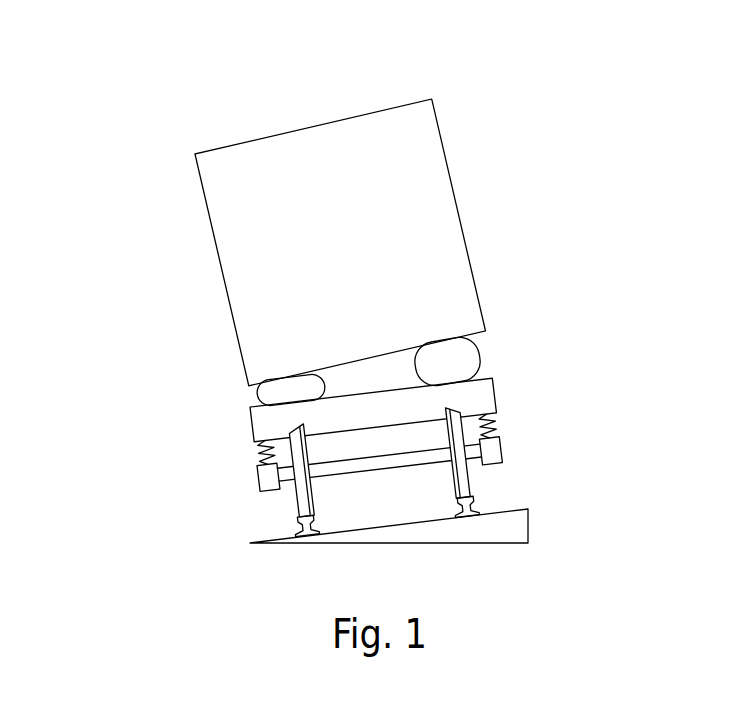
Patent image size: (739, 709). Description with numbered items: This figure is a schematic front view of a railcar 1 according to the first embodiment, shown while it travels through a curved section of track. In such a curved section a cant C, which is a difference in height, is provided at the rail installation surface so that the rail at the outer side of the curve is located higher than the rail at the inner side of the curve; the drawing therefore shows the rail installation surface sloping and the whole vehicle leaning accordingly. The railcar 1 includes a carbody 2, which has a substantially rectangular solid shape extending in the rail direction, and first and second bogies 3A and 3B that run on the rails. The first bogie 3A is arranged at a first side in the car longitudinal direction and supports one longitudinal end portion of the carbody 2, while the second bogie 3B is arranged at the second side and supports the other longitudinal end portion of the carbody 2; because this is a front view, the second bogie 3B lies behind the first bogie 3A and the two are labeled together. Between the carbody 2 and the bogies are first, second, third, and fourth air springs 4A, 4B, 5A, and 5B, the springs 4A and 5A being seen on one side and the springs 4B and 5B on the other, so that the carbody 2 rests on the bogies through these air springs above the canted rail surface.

The railcar 1 is at (366, 275).
The carbody 2 is at (457, 203).
The first bogie 3A is at (465, 456).
The second bogie 3B is at (496, 387).
The first air spring 4A is at (189, 391).
The second air spring 4B is at (546, 348).
The third air spring 5A is at (258, 395).
The fourth air spring 5B is at (473, 358).
The cant C is at (530, 523).